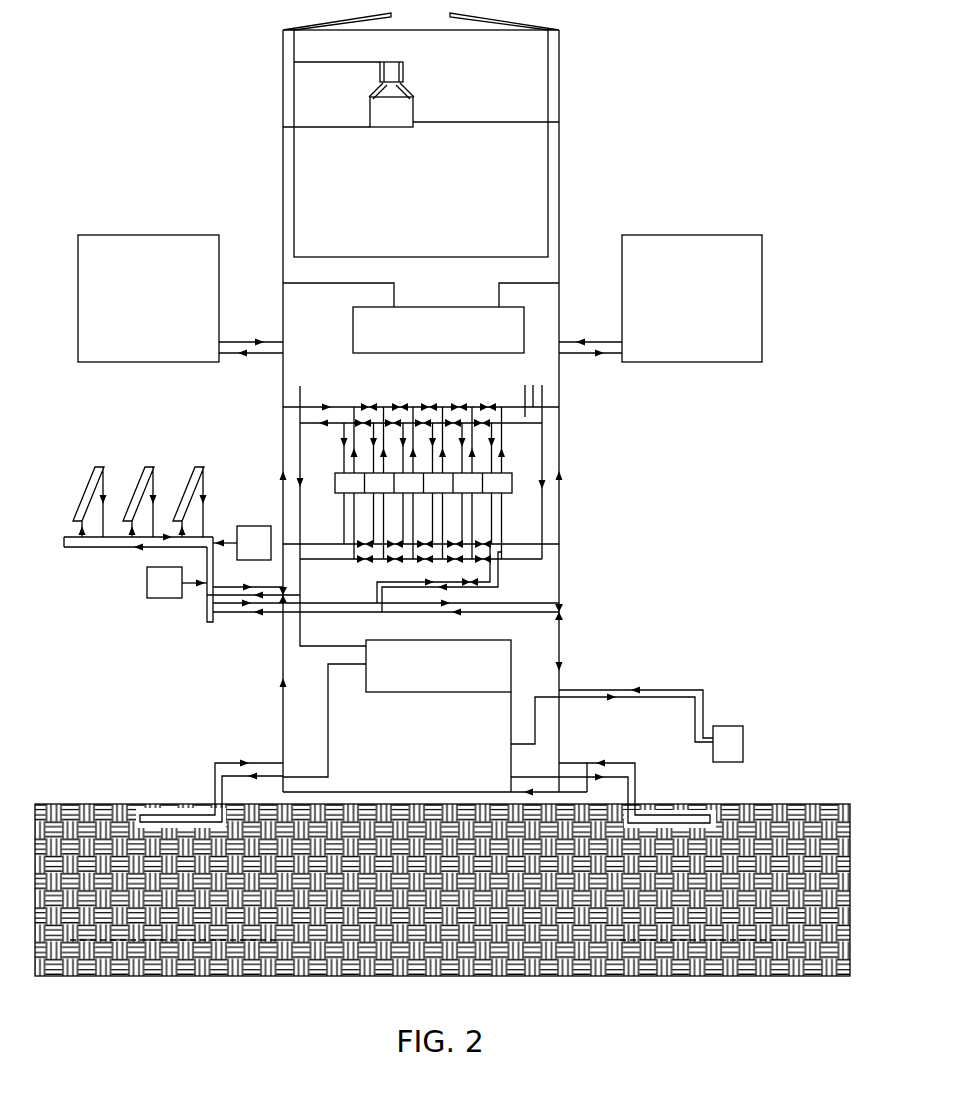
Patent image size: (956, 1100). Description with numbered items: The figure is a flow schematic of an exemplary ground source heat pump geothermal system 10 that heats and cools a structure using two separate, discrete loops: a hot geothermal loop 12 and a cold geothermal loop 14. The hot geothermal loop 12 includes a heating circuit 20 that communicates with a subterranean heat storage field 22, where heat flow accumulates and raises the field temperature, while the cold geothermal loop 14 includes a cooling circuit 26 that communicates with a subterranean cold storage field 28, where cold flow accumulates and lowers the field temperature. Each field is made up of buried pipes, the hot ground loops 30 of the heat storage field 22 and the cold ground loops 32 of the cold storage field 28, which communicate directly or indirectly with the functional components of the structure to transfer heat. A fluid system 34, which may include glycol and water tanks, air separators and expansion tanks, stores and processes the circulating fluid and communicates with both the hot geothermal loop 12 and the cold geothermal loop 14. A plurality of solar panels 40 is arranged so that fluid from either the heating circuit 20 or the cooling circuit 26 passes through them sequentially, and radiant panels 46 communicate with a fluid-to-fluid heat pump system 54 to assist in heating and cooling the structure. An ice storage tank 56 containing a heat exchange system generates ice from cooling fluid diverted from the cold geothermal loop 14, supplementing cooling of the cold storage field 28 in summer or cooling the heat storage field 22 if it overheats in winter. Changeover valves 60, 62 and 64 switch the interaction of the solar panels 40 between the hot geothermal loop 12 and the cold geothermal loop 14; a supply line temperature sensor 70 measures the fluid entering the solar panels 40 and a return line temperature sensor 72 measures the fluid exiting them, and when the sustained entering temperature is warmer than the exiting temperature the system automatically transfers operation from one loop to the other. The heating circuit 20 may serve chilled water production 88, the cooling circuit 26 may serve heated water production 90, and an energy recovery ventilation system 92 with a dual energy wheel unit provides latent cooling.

The ground source heat pump geothermal system 10 is at (682, 588).
The hot geothermal loop 12 is at (166, 722).
The cold geothermal loop 14 is at (610, 744).
The heating circuit 20 is at (215, 772).
The subterranean heat storage field 22 is at (97, 942).
The cooling circuit 26 is at (637, 782).
The subterranean cold storage field 28 is at (760, 942).
The hot ground loops 30 is at (160, 823).
The cold ground loops 32 is at (690, 823).
The fluid system 34 is at (436, 695).
The solar panels 40 is at (200, 466).
The radiant panels 46 is at (408, 92).
The fluid-to-fluid heat pump system 54 is at (503, 524).
The ice storage tank 56 is at (743, 738).
The changeover valve 60 is at (212, 621).
The changeover valve 62 is at (213, 575).
The changeover valve 64 is at (290, 594).
The supply line temperature sensor 70 is at (147, 585).
The return line temperature sensor 72 is at (250, 525).
The chilled water production 88 is at (436, 300).
The heated water production 90 is at (120, 235).
The energy recovery ventilation system 92 is at (720, 235).